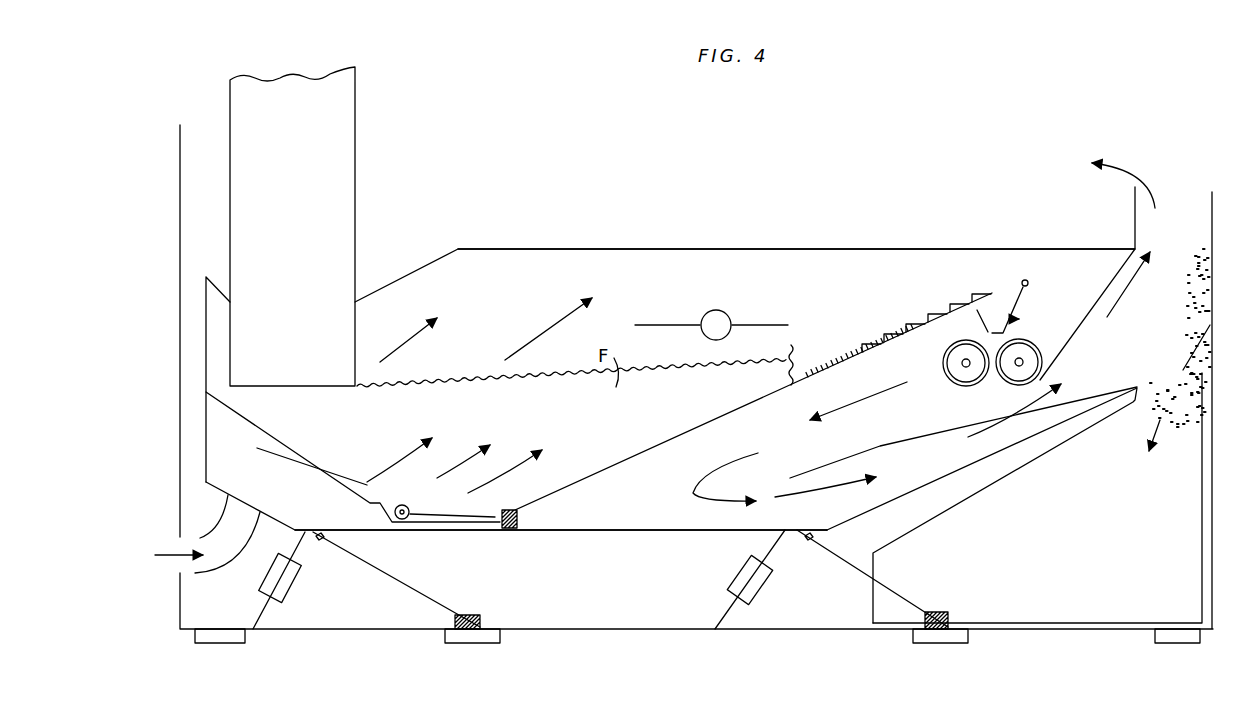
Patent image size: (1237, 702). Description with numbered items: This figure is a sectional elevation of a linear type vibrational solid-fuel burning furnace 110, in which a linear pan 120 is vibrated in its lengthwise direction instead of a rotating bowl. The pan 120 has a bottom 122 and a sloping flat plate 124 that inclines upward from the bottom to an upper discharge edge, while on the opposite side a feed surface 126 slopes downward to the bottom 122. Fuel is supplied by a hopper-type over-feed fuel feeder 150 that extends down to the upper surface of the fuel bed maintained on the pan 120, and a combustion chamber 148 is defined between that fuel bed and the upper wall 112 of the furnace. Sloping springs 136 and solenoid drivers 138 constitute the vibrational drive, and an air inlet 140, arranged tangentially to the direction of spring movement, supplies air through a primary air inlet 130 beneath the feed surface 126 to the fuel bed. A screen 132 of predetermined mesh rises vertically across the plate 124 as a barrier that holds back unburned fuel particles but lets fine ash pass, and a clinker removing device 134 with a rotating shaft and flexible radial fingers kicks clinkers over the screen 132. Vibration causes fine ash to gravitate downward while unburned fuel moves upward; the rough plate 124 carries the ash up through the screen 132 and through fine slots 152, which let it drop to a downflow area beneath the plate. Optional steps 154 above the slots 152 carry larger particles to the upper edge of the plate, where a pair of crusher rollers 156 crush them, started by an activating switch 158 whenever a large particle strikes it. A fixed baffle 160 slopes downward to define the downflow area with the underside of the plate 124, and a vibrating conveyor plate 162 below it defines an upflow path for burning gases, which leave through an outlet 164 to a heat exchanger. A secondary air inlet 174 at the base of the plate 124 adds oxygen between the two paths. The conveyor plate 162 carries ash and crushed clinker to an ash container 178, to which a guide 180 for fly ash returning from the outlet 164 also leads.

The linear type vibrational solid-fuel burning furnace 110 is at (665, 207).
The upper wall 112 is at (460, 252).
The linear pan 120 is at (575, 489).
The bottom 122 is at (472, 522).
The sloping flat plate 124 is at (617, 467).
The feed surface 126 is at (325, 457).
The primary air inlet 130 is at (285, 462).
The screen 132 is at (808, 365).
The clinker removing device 134 is at (718, 311).
The sloping springs 136 is at (415, 588).
The solenoid drivers 138 is at (285, 595).
The air inlet 140 is at (200, 538).
The combustion chamber 148 is at (565, 294).
The hopper-type over-feed fuel feeder 150 is at (348, 167).
The fine slots 152 is at (844, 366).
The steps 154 is at (917, 331).
The crusher rollers 156 is at (1036, 346).
The activating switch 158 is at (1028, 286).
The fixed baffle 160 is at (868, 453).
The vibrating conveyor plate 162 is at (955, 472).
The outlet 164 is at (1197, 260).
The secondary air inlet 174 is at (508, 532).
The ash container 178 is at (1060, 490).
The guide 180 is at (1186, 345).